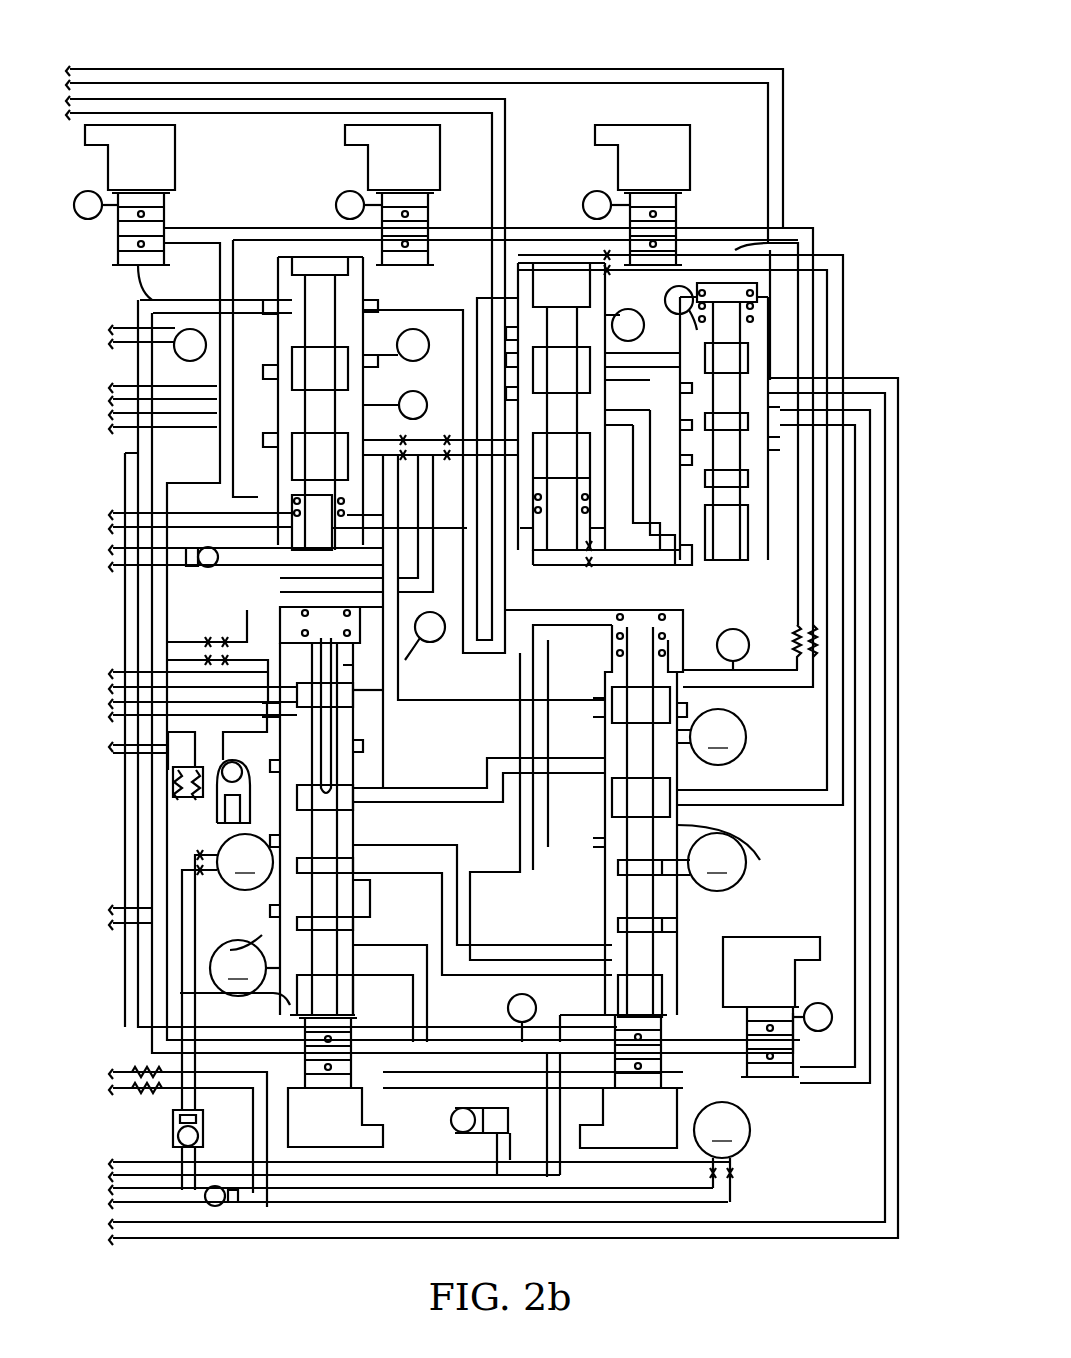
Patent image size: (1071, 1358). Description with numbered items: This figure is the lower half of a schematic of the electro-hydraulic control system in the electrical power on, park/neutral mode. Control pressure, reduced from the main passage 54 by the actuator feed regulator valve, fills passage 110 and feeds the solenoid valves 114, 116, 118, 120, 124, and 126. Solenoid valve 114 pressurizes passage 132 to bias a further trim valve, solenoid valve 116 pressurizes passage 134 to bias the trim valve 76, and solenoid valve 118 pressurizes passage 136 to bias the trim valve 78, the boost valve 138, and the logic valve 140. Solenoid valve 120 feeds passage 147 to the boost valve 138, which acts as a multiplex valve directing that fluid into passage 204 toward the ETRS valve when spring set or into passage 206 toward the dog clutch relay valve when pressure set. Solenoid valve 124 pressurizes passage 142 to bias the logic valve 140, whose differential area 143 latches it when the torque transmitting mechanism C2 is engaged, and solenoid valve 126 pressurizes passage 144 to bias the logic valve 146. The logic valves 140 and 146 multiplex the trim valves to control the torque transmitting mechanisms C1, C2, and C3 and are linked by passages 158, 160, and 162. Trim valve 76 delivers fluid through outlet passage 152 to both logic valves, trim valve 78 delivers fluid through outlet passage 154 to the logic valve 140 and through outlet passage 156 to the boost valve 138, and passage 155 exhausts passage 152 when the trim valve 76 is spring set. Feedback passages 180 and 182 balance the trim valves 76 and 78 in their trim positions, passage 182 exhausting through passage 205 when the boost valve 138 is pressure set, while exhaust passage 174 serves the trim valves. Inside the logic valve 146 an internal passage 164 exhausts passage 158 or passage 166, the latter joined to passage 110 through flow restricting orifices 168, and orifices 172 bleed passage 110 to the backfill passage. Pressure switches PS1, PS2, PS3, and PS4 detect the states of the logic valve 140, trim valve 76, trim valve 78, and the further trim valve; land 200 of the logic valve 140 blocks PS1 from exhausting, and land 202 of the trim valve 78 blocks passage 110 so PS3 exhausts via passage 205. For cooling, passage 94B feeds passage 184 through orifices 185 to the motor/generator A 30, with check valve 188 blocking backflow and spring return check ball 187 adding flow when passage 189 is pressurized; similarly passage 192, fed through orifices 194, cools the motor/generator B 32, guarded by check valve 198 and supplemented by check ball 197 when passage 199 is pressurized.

The passage 206 is at (678, 69).
The solenoid valve 114 is at (124, 170).
The solenoid valve 116 is at (379, 170).
The solenoid valve 118 is at (629, 170).
The solenoid valve 120 is at (756, 985).
The solenoid valve 124 is at (626, 1130).
The solenoid valve 126 is at (311, 1130).
The passage 110 is at (272, 228).
The passage 136 is at (750, 243).
The passage 132 is at (138, 267).
The trim valve 76 is at (368, 323).
The passage 134 is at (413, 304).
The passage 155 is at (183, 377).
The main passage 54 is at (428, 427).
The outlet passage 154 is at (483, 415).
The land 202 is at (547, 296).
The trim valve 78 is at (617, 307).
The passage 205 is at (625, 381).
The outlet passage 156 is at (605, 445).
The feedback passage 182 is at (598, 528).
The boost valve 138 is at (729, 575).
The logic valve 140 is at (637, 600).
The flow restricting orifices 172 is at (798, 625).
The passage 204 is at (870, 378).
The feedback passage 180 is at (280, 540).
The exhaust passage 174 is at (160, 548).
The passage 166 is at (243, 640).
The flow restricting orifices 168 is at (205, 642).
The logic valve 146 is at (366, 669).
The passage 164 is at (338, 710).
The outlet passage 152 is at (403, 690).
The passage 158 is at (435, 790).
The passage 160 is at (435, 845).
The passage 162 is at (478, 930).
The land 200 is at (627, 715).
The torque transmitting mechanism C2 is at (711, 737).
The torque transmitting mechanism C1 is at (717, 862).
The differential area 143 is at (760, 860).
The passage 94B is at (180, 725).
The flow restricting orifices 185 is at (190, 755).
The passage 189 is at (255, 760).
The spring return check ball 187 is at (225, 825).
The motor/generator A 30 is at (227, 972).
The passage 184 is at (232, 950).
The torque transmitting mechanism C3 is at (245, 968).
The passage 144 is at (180, 993).
The passage 192 is at (230, 1072).
The flow restricting orifices 194 is at (140, 1092).
The one-way check valve 188 is at (205, 1135).
The one-way check valve 198 is at (215, 1208).
The spring return check ball 197 is at (452, 1125).
The passage 199 is at (430, 1015).
The passage 142 is at (595, 1015).
The motor/generator B 32 is at (722, 1152).
The passage 147 is at (845, 1060).
The pressure switch PS1 is at (733, 649).
The pressure switch PS2 is at (396, 345).
The pressure switch PS3 is at (628, 325).
The pressure switch PS4 is at (157, 343).